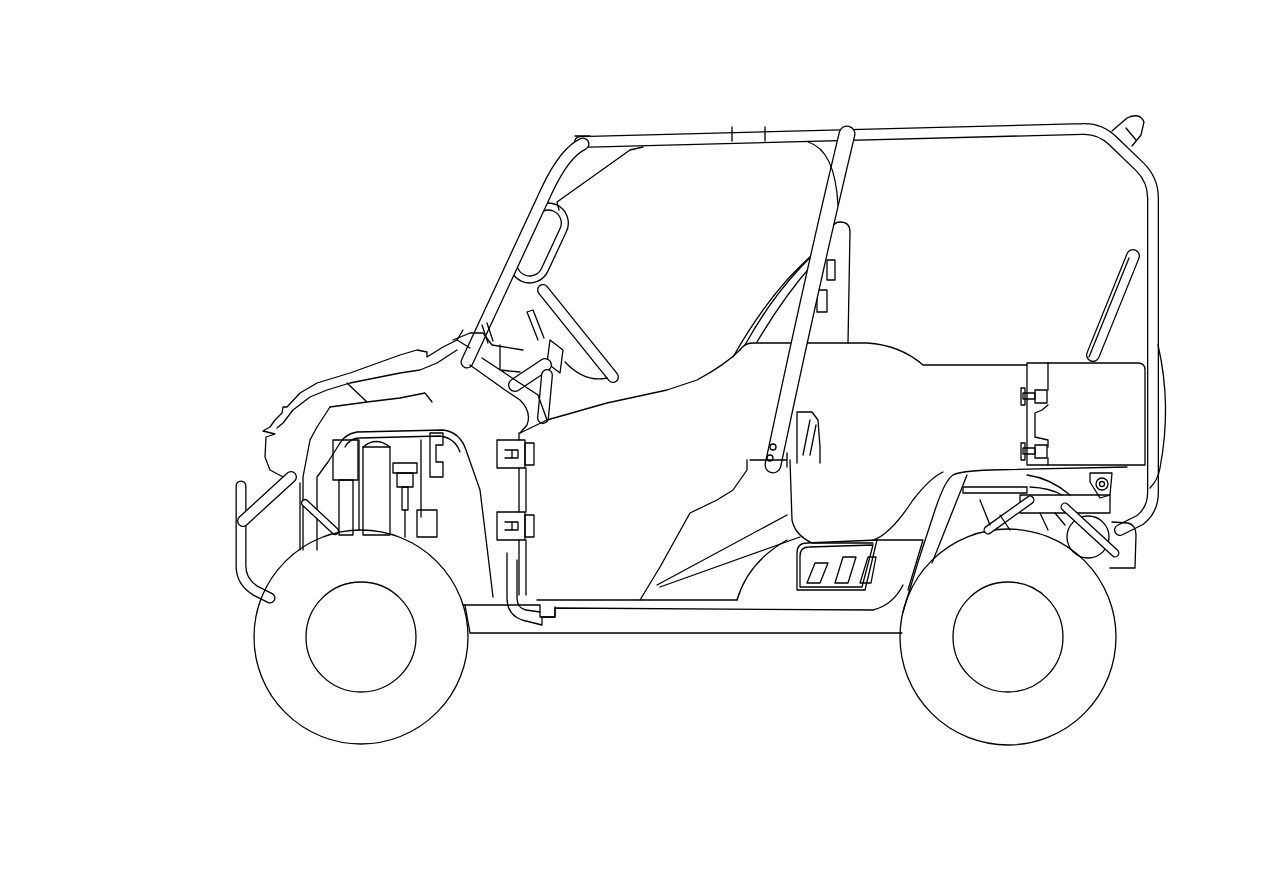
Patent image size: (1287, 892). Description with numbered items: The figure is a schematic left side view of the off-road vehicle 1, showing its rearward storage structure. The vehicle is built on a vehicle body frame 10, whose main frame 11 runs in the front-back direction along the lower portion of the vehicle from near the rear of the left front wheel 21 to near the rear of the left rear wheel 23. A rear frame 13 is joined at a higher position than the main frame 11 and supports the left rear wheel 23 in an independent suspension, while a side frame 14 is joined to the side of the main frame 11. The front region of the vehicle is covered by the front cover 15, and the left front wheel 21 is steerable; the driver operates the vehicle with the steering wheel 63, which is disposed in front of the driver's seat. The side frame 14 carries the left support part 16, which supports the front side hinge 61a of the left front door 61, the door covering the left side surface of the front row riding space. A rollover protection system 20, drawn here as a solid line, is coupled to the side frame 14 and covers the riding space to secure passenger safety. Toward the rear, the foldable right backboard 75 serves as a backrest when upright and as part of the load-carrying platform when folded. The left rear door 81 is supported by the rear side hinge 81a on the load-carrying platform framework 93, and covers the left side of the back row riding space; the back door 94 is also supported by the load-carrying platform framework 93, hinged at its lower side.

The off-road vehicle 1 is at (1063, 88).
The vehicle body frame 10 is at (832, 600).
The main frame 11 is at (778, 628).
The rear frame 13 is at (1103, 498).
The side frame 14 is at (690, 608).
The front cover 15 is at (290, 447).
The left support part 16 is at (507, 553).
The rollover protection system 20 is at (837, 121).
The left front wheel 21 is at (360, 740).
The left rear wheel 23 is at (1008, 722).
The left front door 61 is at (580, 553).
The front side hinge 61a is at (495, 457).
The steering wheel 63 is at (563, 312).
The right backboard 75 is at (1120, 258).
The left rear door 81 is at (857, 510).
The rear side hinge 81a is at (1048, 393).
The load-carrying platform framework 93 is at (1127, 384).
The back door 94 is at (1163, 437).